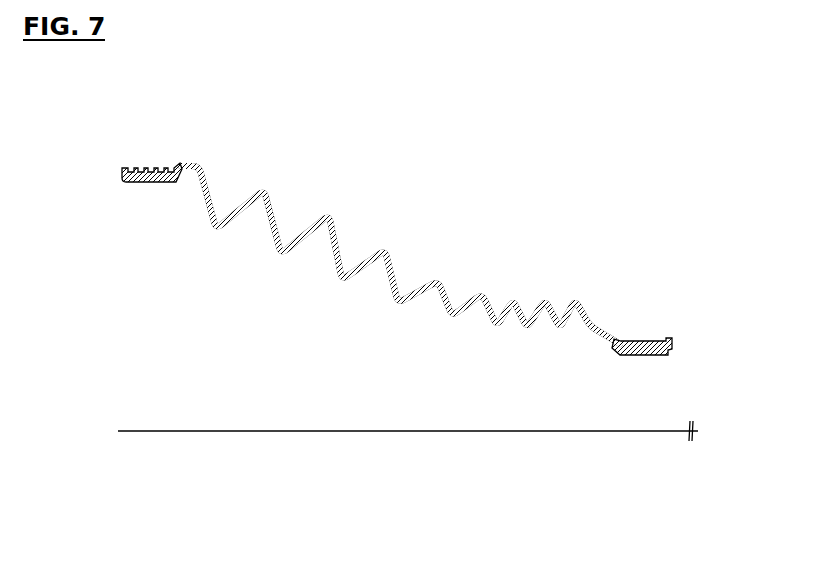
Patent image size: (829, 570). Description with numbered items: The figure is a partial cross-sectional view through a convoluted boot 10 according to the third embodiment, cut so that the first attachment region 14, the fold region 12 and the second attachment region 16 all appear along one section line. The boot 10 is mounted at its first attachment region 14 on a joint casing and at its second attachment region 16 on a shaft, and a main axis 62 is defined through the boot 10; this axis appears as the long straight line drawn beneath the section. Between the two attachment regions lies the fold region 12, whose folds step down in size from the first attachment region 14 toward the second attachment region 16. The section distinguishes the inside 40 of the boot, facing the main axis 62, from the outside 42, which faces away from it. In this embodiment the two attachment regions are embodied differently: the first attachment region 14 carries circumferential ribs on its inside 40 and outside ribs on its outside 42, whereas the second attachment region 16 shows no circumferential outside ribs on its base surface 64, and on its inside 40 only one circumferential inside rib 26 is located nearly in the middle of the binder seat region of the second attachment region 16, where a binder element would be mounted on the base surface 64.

The convoluted boot 10 is at (407, 155).
The fold region 12 is at (347, 195).
The first attachment region 14 is at (143, 137).
The second attachment region 16 is at (665, 262).
The circumferential inside rib 26 is at (647, 357).
The inside 40 is at (415, 420).
The outside 42 is at (492, 232).
The main axis 62 is at (652, 431).
The base surface 64 is at (655, 342).